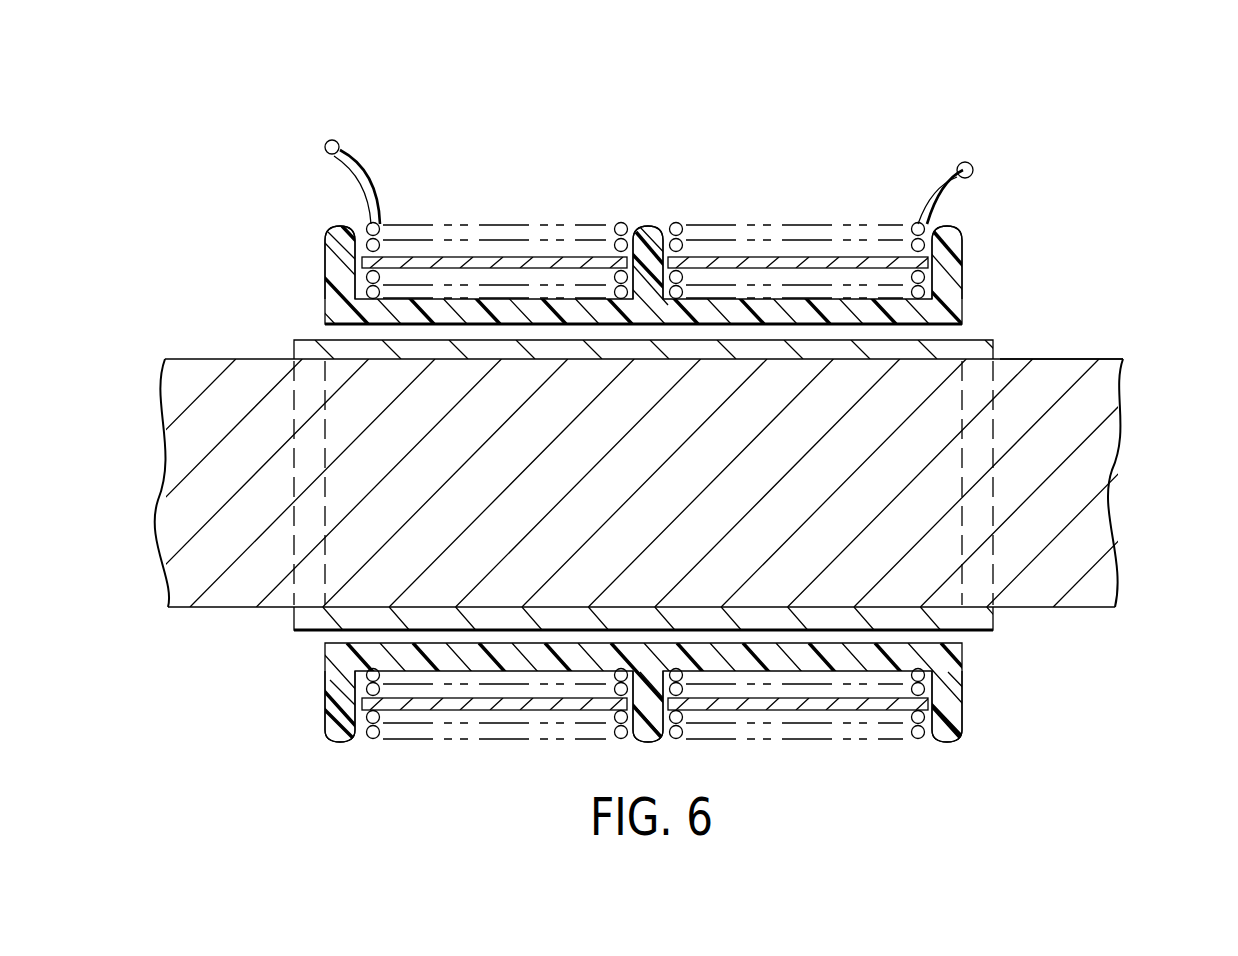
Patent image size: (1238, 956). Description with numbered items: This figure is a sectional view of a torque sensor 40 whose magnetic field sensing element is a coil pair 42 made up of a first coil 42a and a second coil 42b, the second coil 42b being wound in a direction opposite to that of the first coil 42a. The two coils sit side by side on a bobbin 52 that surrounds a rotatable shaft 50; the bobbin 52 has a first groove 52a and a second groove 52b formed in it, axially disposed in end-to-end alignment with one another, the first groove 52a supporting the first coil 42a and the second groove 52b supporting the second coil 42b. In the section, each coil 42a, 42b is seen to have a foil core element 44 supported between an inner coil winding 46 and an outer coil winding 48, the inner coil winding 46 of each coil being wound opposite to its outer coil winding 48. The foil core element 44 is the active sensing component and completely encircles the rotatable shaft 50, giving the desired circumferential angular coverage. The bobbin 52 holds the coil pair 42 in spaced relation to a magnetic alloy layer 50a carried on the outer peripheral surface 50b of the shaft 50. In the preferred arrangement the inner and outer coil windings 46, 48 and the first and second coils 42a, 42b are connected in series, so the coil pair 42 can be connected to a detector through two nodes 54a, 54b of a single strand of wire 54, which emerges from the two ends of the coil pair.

The torque sensor 40 is at (195, 115).
The coil pair 42 is at (840, 104).
The first coil 42a is at (476, 165).
The second coil 42b is at (787, 170).
The foil core element 44 is at (365, 264).
The inner coil winding 46 is at (375, 264).
The outer coil winding 48 is at (614, 228).
The rotatable shaft 50 is at (1120, 306).
The magnetic alloy layer 50a is at (998, 343).
The outer peripheral surface 50b is at (1093, 357).
The bobbin 52 is at (982, 216).
The first groove 52a is at (350, 220).
The second groove 52b is at (661, 222).
The single strand of wire 54 is at (350, 152).
The node 54a is at (324, 141).
The node 54b is at (970, 162).